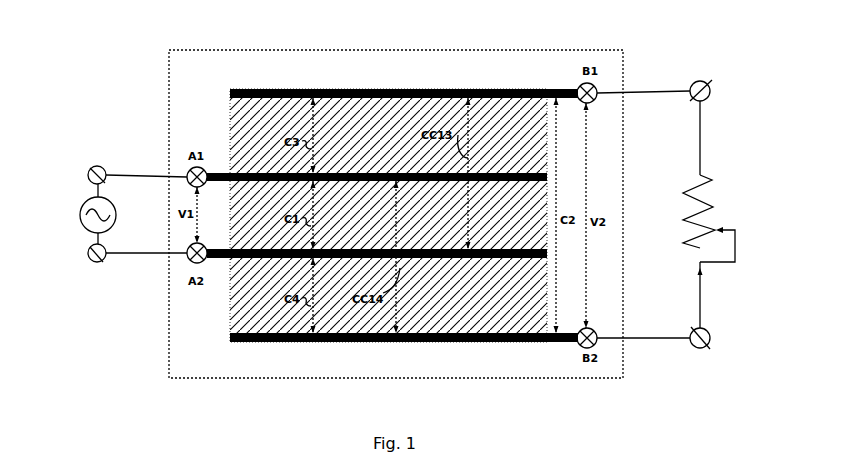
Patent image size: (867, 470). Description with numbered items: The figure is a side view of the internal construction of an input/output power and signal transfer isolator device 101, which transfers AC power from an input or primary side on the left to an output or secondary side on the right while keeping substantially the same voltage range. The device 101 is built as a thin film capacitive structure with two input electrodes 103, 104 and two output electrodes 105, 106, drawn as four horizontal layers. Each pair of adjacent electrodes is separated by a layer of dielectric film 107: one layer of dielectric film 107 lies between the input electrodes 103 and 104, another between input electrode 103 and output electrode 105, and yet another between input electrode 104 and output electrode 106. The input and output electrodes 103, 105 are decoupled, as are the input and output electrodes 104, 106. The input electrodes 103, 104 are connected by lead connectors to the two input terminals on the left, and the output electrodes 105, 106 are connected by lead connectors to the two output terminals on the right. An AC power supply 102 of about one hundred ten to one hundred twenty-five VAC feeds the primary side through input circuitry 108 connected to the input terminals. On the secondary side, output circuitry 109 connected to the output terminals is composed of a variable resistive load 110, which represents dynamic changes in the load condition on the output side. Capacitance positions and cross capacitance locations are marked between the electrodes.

The input/output power and signal transfer isolator device 101 is at (383, 50).
The AC power supply 102 is at (80, 215).
The input electrode 103 is at (221, 171).
The input electrode 104 is at (248, 259).
The output electrode 105 is at (470, 89).
The output electrode 106 is at (489, 343).
The dielectric film 107 is at (239, 128).
The input circuitry 108 is at (148, 173).
The output circuitry 109 is at (700, 158).
The variable resistive load 110 is at (712, 186).